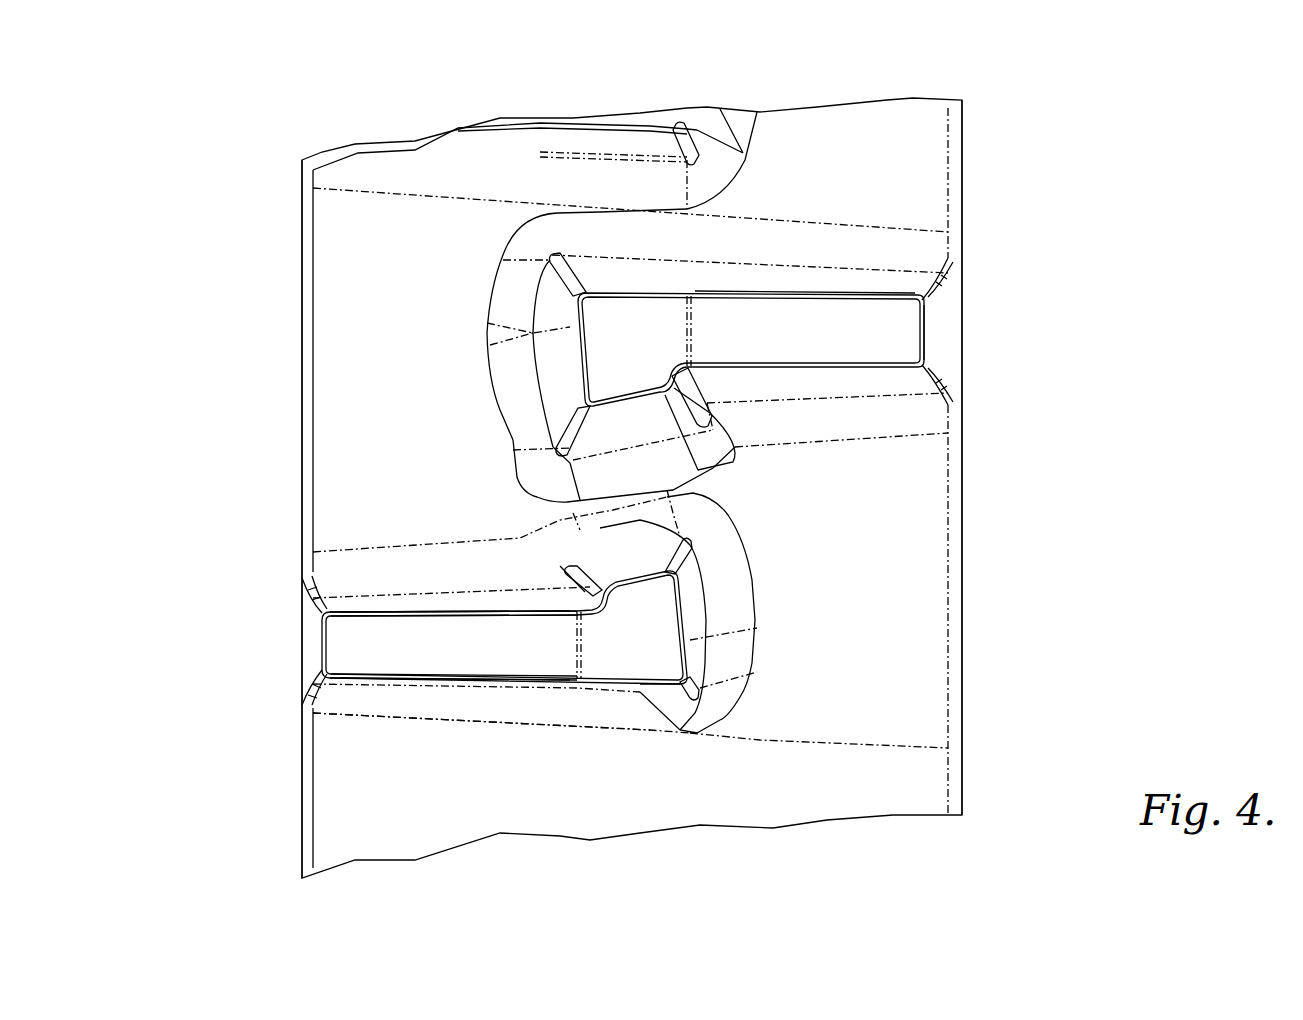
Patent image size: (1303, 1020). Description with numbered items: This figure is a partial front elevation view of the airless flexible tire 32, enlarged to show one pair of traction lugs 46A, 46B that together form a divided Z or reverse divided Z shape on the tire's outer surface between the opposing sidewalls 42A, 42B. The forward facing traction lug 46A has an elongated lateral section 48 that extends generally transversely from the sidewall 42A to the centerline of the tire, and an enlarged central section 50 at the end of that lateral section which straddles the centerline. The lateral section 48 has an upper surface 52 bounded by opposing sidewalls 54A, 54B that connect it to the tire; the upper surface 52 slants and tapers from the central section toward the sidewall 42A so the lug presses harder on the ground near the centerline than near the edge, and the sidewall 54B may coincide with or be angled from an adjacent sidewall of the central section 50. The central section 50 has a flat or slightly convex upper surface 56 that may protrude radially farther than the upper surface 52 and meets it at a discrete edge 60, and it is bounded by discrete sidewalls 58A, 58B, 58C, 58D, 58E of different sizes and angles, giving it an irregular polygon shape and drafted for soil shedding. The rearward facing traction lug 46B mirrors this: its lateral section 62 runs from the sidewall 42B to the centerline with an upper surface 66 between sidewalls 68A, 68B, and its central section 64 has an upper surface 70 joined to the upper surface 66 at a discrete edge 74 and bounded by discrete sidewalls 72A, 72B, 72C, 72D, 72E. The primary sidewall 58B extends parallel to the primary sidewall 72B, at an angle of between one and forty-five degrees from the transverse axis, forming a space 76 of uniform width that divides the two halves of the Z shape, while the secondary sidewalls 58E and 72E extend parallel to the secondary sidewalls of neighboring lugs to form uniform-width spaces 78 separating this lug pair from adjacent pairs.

The airless flexible tire 32 is at (1086, 102).
The sidewall 42A is at (302, 362).
The sidewall 42B is at (962, 557).
The forward facing traction lug 46A is at (284, 655).
The rearward facing traction lug 46B is at (1021, 303).
The lateral section 48 is at (415, 706).
The central section 50 is at (644, 724).
The upper surface 52 is at (362, 655).
The sidewall 54A is at (378, 607).
The sidewall 54B is at (575, 682).
The upper surface 56 is at (668, 632).
The discrete sidewall 58A is at (596, 598).
The discrete sidewall 58B is at (580, 592).
The discrete sidewall 58C is at (690, 595).
The discrete sidewall 58D is at (689, 663).
The discrete sidewall 58E is at (666, 690).
The discrete edge 60 is at (570, 648).
The lateral section 62 is at (784, 292).
The central section 64 is at (606, 247).
The upper surface 66 is at (888, 327).
The sidewall 68A is at (818, 383).
The sidewall 68B is at (740, 287).
The upper surface 70 is at (598, 330).
The discrete sidewall 72A is at (690, 410).
The discrete sidewall 72B is at (640, 420).
The discrete sidewall 72C is at (565, 372).
The discrete sidewall 72D is at (553, 292).
The discrete sidewall 72E is at (667, 275).
The discrete edge 74 is at (698, 330).
The space 76 is at (527, 504).
The spaces 78 is at (509, 213).